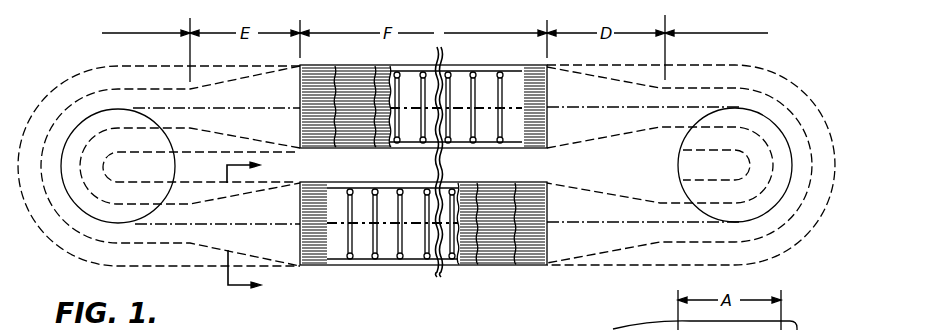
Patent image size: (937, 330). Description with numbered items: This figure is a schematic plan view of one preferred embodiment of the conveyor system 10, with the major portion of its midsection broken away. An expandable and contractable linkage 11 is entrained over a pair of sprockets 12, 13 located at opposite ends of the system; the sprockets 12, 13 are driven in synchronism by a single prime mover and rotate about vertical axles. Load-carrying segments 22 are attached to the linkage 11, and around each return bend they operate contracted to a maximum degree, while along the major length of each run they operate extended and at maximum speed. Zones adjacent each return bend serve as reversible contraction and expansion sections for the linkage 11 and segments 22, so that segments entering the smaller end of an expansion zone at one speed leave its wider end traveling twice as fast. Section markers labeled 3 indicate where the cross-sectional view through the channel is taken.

The conveyor system 10 is at (378, 274).
The expandable and contractable linkage 11 is at (487, 87).
The sprocket 12 is at (158, 211).
The sprocket 13 is at (678, 153).
The load-carrying segment 22 is at (347, 65).
The section line for FIG. 3 is at (254, 229).